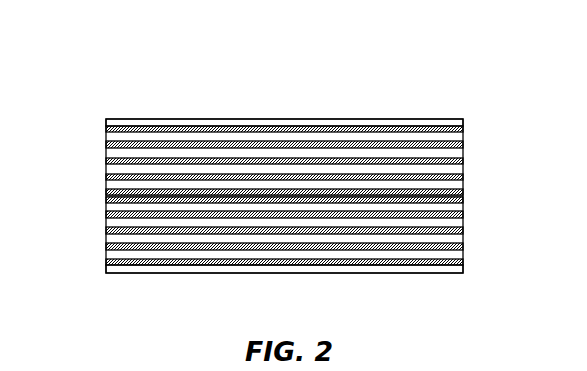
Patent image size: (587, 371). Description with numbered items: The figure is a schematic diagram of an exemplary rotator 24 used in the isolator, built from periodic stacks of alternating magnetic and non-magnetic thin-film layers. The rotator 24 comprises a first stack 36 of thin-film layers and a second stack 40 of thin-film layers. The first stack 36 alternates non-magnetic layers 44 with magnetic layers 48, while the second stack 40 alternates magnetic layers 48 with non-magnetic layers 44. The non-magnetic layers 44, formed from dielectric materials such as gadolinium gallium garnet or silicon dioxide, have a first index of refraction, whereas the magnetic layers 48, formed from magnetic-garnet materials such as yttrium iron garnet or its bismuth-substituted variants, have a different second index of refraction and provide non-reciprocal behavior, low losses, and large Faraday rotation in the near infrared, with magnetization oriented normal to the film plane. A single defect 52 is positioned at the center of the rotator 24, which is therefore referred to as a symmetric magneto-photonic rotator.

The rotator 24 is at (470, 61).
The first stack 36 is at (88, 188).
The second stack 40 is at (88, 113).
The non-magnetic layers 44 is at (455, 111).
The magnetic layers 48 is at (455, 121).
The defect 52 is at (455, 192).